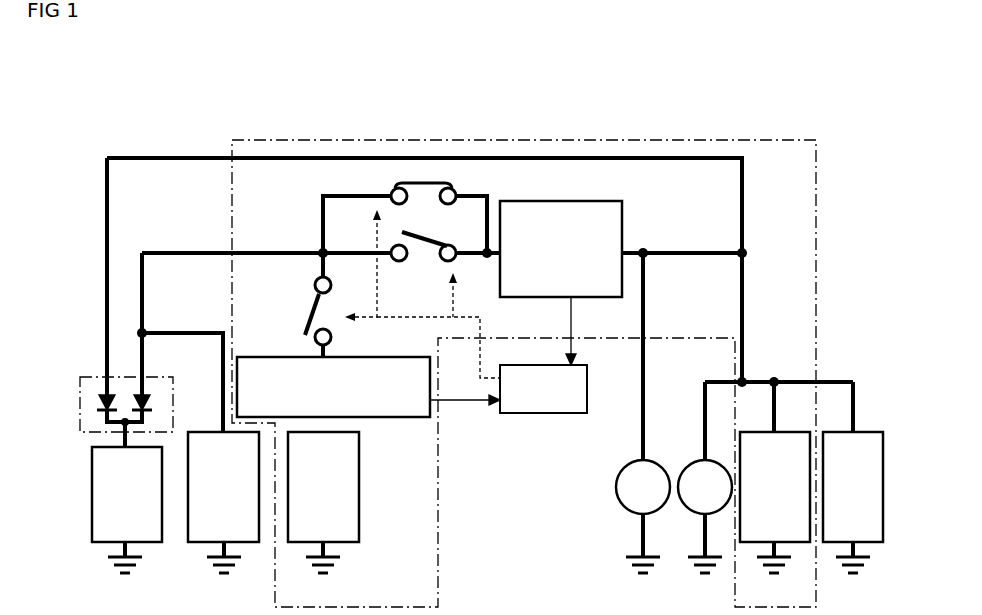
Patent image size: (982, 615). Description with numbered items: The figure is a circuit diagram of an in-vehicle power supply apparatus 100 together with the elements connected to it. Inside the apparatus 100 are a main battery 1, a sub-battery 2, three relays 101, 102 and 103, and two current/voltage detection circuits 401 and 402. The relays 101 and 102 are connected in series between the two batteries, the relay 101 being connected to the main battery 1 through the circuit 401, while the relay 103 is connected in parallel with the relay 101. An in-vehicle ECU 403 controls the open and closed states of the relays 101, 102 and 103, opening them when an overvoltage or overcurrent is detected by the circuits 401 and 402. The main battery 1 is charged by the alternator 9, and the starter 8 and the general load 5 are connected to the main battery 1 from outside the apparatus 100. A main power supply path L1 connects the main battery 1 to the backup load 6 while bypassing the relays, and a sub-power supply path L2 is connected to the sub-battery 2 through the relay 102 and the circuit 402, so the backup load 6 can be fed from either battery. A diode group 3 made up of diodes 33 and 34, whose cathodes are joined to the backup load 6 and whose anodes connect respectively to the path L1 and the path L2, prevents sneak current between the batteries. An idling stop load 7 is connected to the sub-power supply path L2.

The in-vehicle power supply apparatus 100 is at (660, 140).
The main power supply path L1 is at (205, 158).
The sub-power supply path L2 is at (205, 253).
The relay 103 is at (458, 186).
The relay 101 is at (422, 265).
The relay 102 is at (338, 323).
The circuit 401 is at (575, 201).
The circuit 402 is at (268, 356).
The in-vehicle ECU 403 is at (537, 415).
The diode group 3 is at (78, 425).
The diode 33 is at (97, 398).
The diode 34 is at (148, 396).
The backup load 6 is at (92, 533).
The idling stop load 7 is at (190, 530).
The sub-battery 2 is at (359, 489).
The alternator 9 is at (625, 508).
The starter 8 is at (695, 508).
The main battery 1 is at (768, 431).
The load 5 is at (885, 531).